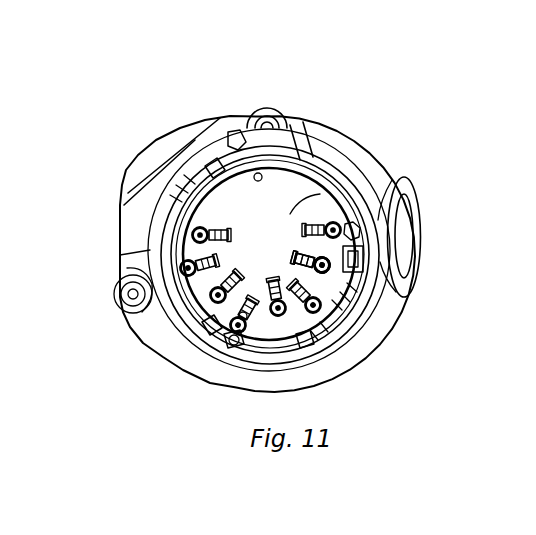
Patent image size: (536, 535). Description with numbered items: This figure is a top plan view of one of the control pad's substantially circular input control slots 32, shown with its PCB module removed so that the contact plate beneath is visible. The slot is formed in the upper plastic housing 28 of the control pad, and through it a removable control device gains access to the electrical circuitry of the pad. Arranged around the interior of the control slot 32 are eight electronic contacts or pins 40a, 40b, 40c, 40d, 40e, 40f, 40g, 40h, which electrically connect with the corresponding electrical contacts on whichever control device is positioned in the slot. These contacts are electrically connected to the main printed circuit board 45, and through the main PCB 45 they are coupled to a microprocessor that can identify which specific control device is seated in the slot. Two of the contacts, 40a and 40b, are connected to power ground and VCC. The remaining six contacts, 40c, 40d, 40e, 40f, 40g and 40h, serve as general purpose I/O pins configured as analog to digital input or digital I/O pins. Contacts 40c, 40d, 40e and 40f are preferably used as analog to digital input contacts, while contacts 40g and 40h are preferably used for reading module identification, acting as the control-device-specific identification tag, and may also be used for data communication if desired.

The upper plastic housing 28 is at (210, 118).
The control slot 32 is at (293, 140).
The main printed circuit board 45 is at (292, 212).
The electronic contact 40a is at (192, 232).
The electronic contact 40b is at (183, 266).
The electronic contact 40c is at (217, 298).
The electronic contact 40d is at (237, 335).
The electronic contact 40e is at (316, 313).
The electronic contact 40f is at (319, 310).
The electronic contact 40g is at (332, 266).
The electronic contact 40h is at (338, 227).